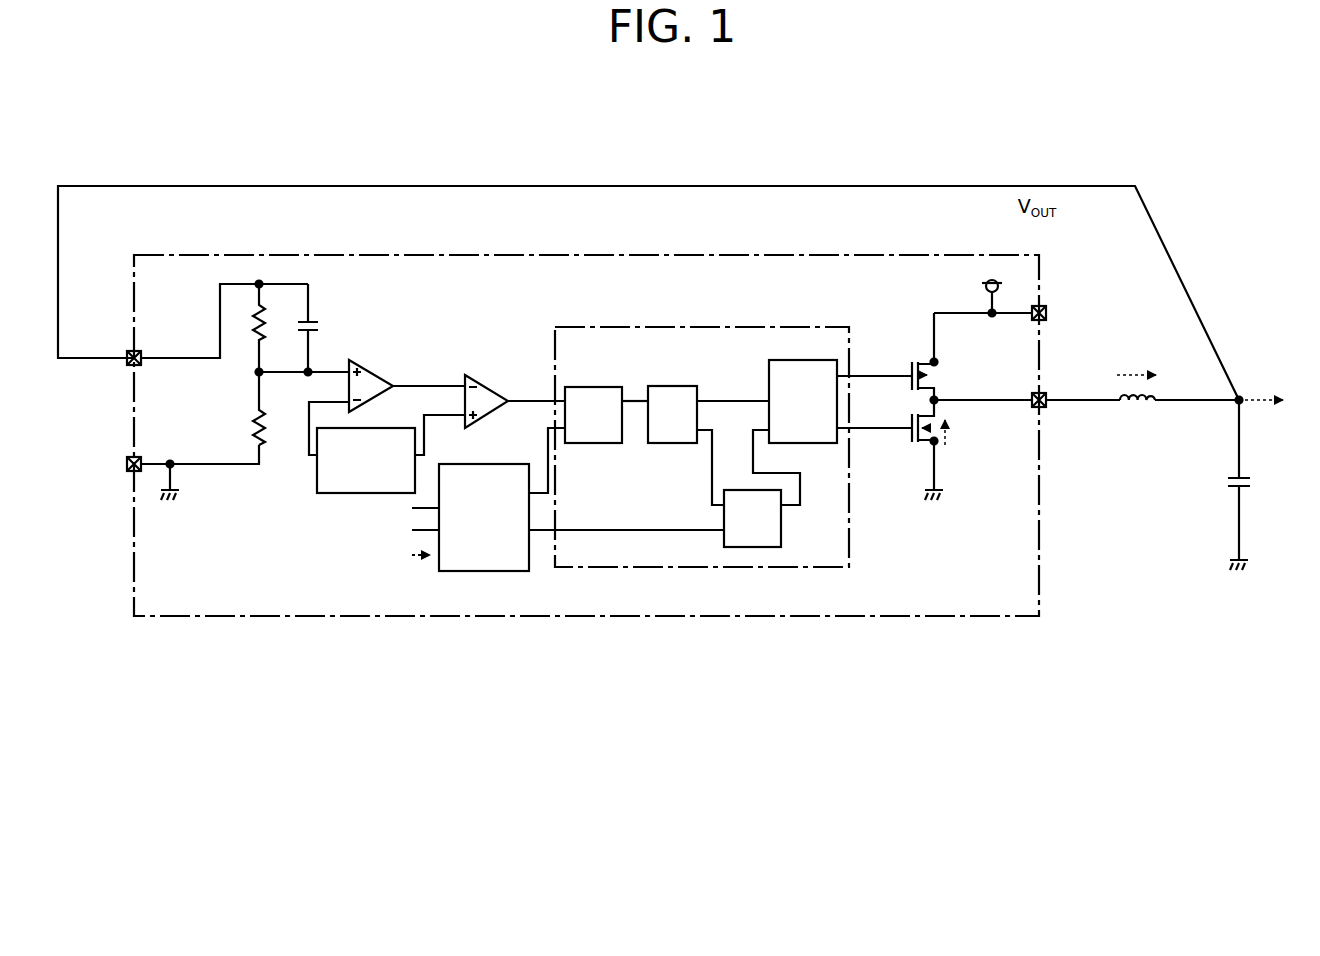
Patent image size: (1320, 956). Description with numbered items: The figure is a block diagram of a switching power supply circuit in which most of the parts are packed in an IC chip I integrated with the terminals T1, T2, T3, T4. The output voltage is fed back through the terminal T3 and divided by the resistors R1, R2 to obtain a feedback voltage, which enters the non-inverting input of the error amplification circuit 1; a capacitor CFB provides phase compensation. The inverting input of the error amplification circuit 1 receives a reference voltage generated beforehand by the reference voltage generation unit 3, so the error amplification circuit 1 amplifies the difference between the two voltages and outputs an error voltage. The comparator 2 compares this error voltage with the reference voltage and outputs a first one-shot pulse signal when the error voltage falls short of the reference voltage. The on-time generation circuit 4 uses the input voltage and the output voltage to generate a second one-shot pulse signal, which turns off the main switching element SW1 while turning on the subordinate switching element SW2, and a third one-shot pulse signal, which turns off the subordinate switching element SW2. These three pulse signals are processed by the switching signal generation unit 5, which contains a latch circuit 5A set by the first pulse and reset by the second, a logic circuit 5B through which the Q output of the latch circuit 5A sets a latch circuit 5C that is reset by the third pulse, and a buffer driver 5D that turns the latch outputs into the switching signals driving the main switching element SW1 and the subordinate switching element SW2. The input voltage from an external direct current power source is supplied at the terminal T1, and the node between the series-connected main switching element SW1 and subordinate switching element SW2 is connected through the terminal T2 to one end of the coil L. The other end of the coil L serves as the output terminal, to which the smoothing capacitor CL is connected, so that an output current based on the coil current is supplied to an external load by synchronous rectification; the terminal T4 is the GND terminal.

The switching regulator IC I is at (636, 255).
The error amplification circuit 1 is at (375, 385).
The comparator 2 is at (493, 398).
The reference voltage generation unit 3 is at (317, 478).
The on-time generation circuit 4 is at (492, 573).
The switching signal generation unit 5 is at (771, 327).
The latch circuit 5A is at (600, 386).
The logic circuit 5B is at (677, 386).
The latch circuit 5C is at (757, 548).
The buffer driver 5D is at (812, 360).
The terminal T1 is at (1066, 310).
The terminal T2 is at (1063, 426).
The terminal T3 is at (102, 329).
The terminal T4 is at (105, 452).
The resistor R1 is at (274, 328).
The resistor R2 is at (274, 408).
The capacitor CFB is at (320, 328).
The main switching element SW1 is at (912, 356).
The subordinate switching element SW2 is at (914, 450).
The coil L is at (1137, 413).
The smoothing capacitor CL is at (1225, 480).